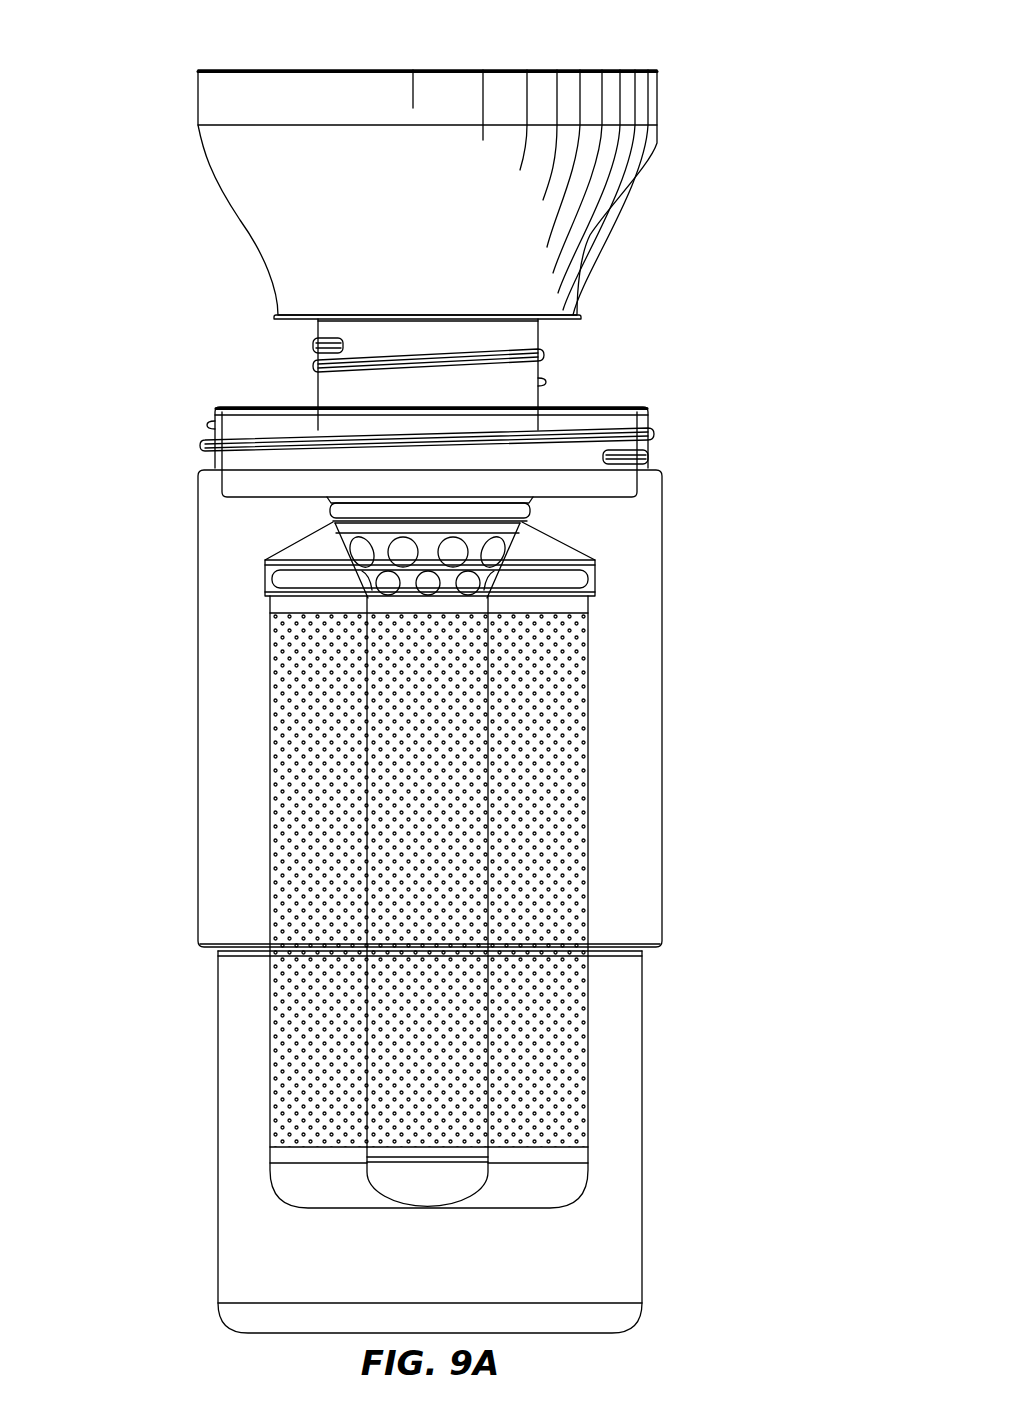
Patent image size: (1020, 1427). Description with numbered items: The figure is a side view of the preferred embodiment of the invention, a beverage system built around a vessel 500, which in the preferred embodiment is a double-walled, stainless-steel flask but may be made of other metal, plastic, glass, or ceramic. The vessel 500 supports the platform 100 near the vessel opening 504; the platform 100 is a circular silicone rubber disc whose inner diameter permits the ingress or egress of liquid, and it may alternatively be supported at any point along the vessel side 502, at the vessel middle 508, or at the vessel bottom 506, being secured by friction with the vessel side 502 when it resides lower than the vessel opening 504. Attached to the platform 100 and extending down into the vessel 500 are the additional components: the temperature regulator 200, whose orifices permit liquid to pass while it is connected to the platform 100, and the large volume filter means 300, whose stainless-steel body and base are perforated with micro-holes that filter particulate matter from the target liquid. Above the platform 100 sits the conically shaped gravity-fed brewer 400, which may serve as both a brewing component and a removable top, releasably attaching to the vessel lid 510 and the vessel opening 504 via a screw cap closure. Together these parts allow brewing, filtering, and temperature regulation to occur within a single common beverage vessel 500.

The platform 100 is at (243, 488).
The temperature regulator 200 is at (502, 535).
The large volume filter means 300 is at (277, 1080).
The gravity-fed brewer 400 is at (613, 218).
The vessel 500 is at (683, 793).
The vessel side 502 is at (198, 690).
The vessel opening 504 is at (653, 452).
The vessel bottom 506 is at (235, 1320).
The vessel middle 508 is at (202, 950).
The vessel lid 510 is at (599, 52).